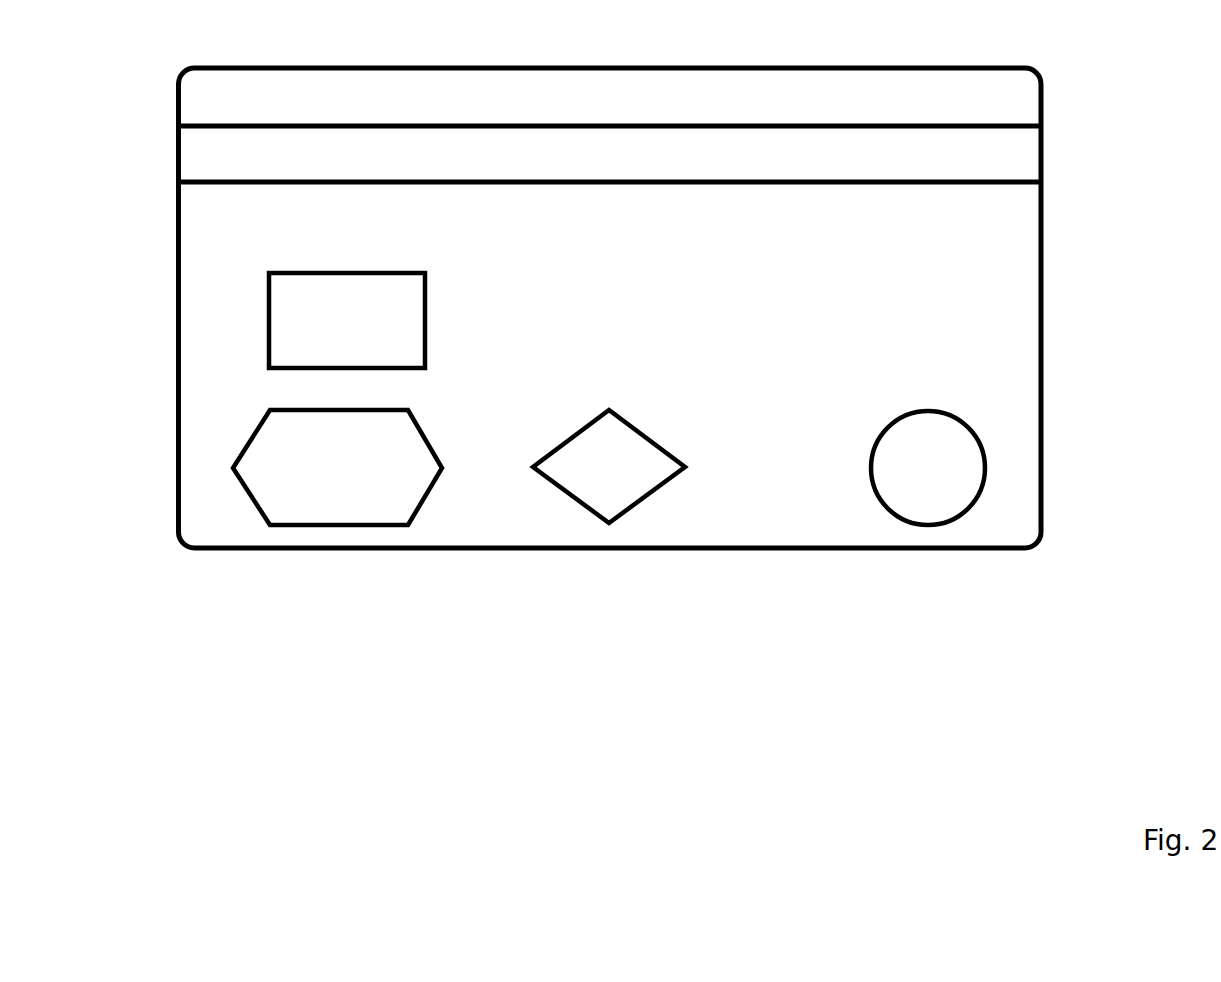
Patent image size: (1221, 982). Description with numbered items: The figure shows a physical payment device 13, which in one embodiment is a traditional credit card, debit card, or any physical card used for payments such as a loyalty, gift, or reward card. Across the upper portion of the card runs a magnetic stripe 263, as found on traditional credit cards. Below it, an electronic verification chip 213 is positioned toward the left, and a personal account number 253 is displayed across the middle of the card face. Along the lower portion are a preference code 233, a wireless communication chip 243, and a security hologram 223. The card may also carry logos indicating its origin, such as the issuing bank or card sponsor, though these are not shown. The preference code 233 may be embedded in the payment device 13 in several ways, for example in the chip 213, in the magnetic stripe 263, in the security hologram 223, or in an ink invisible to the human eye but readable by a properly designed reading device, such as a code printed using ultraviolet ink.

The payment device 13 is at (228, 583).
The electronic verification chip 213 is at (269, 322).
The security hologram 223 is at (940, 495).
The preference code 233 is at (357, 525).
The wireless communication chip 243 is at (630, 510).
The personal account number 253 is at (903, 322).
The magnetic stripe 263 is at (1043, 141).